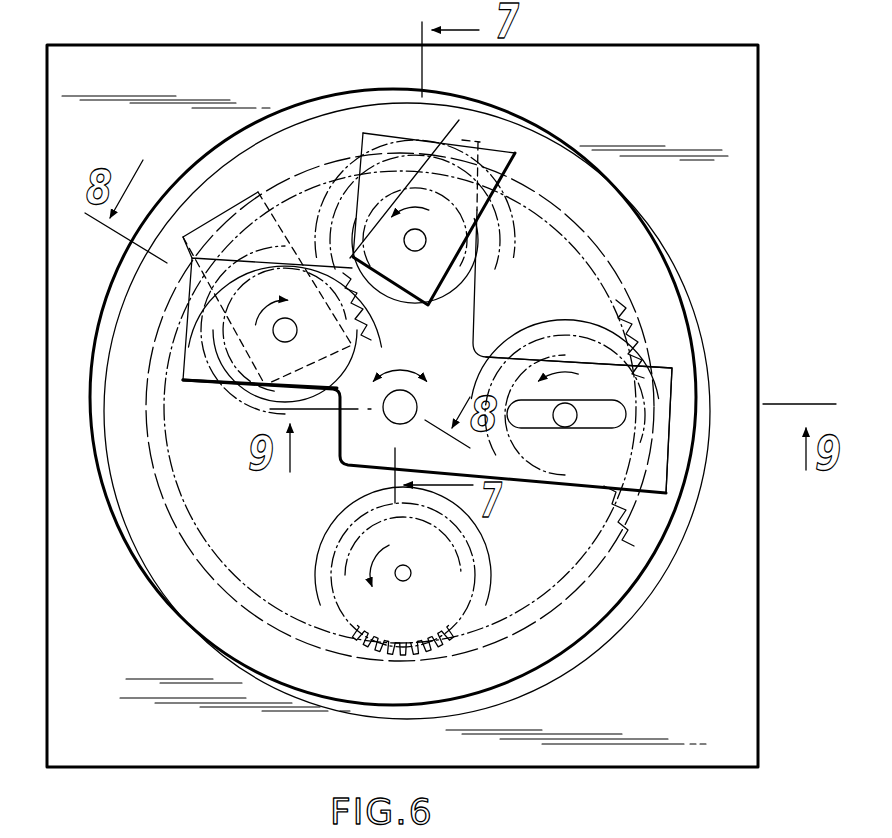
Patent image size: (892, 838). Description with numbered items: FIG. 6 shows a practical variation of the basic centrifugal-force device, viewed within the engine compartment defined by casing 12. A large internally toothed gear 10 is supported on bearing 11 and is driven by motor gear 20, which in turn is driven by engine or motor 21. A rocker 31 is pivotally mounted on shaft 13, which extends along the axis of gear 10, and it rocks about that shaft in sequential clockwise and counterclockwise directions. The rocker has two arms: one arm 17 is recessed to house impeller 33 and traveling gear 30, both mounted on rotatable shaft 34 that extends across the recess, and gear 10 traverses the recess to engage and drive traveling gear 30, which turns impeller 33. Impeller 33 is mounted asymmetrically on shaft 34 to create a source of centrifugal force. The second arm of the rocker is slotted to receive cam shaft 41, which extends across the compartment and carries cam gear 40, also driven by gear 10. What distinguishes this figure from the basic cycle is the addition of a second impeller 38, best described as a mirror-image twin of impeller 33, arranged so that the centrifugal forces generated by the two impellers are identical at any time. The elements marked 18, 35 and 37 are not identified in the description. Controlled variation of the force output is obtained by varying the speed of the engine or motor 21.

The internally toothed gear 10 is at (583, 607).
The bearing 11 is at (669, 551).
The casing 12 is at (760, 117).
The shaft 13 is at (395, 418).
The arm 17 is at (482, 292).
The ratchet teeth 18 is at (536, 498).
The motor gear 20 is at (462, 562).
The motor 21 is at (408, 580).
The traveling gear 30 is at (331, 214).
The rocker 31 is at (663, 395).
The impeller 33 is at (459, 120).
The shaft 34 is at (420, 244).
The ratchet teeth 35 is at (308, 250).
The left plate pin 37 is at (277, 335).
The second impeller 38 is at (208, 218).
The cam gear 40 is at (603, 352).
The cam shaft 41 is at (575, 420).